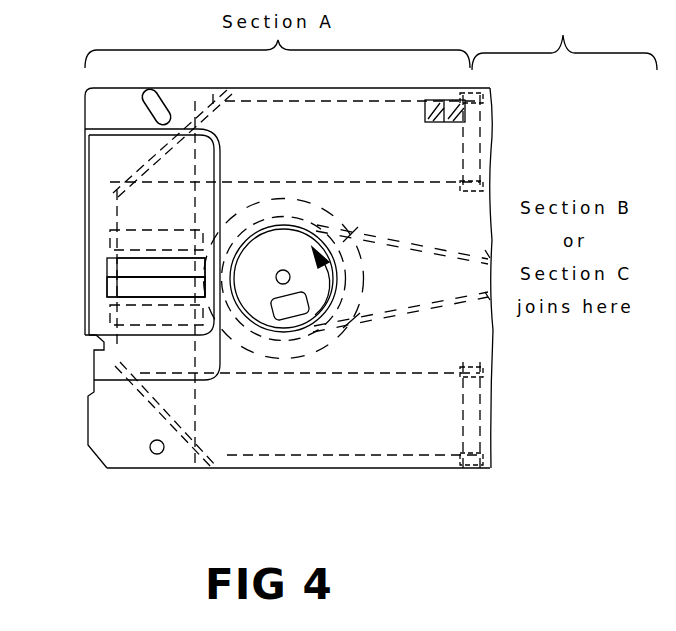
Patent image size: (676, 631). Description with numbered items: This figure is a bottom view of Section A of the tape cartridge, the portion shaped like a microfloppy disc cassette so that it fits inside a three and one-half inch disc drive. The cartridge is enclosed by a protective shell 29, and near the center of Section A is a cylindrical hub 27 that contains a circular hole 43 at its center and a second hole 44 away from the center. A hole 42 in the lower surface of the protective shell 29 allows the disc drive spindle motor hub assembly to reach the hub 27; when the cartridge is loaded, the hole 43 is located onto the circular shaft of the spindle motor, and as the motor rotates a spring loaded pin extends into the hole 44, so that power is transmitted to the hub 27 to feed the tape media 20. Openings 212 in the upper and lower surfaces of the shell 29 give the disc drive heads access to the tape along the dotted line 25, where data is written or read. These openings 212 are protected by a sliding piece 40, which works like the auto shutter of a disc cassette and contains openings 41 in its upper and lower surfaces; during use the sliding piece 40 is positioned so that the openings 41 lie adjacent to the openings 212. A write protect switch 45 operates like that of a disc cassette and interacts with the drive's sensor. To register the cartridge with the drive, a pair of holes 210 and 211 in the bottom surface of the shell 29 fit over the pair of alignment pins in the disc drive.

The tape media 20 is at (162, 296).
The dotted line 25 is at (185, 277).
The cylindrical hub 27 is at (300, 263).
The protective shell 29 is at (125, 414).
The sliding piece 40 is at (85, 226).
The openings 41 is at (119, 306).
The hole 42 is at (337, 277).
The circular hole 43 is at (278, 273).
The second hole 44 is at (272, 308).
The write protect switch 45 is at (425, 121).
The hole 210 is at (150, 447).
The hole 211 is at (150, 112).
The openings 212 is at (107, 278).